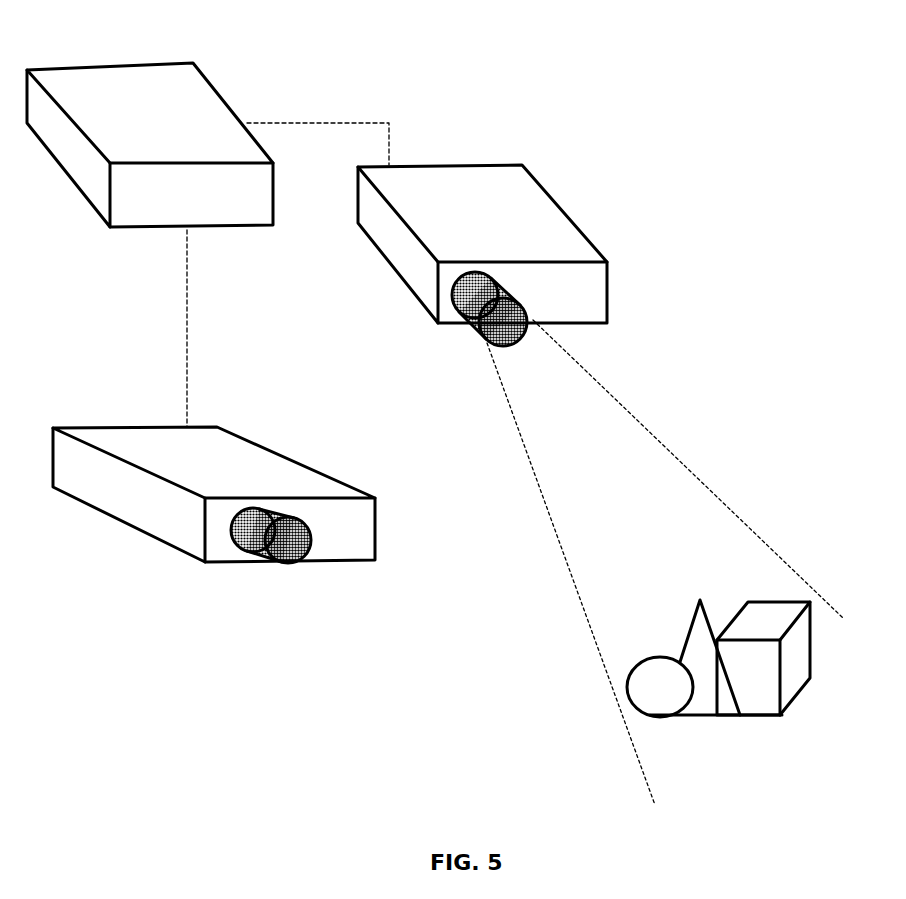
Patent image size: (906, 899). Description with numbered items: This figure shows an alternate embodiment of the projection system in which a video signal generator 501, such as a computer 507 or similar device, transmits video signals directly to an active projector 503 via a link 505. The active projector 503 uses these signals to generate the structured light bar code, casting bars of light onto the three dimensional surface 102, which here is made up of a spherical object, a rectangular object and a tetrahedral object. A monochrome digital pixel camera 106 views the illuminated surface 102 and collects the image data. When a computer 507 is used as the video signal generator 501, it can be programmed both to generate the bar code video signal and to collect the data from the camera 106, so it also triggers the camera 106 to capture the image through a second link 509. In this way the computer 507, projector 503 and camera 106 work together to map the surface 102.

The video signal generator 501 is at (262, 81).
The computer 507 is at (143, 63).
The link 505 is at (355, 123).
The link 509 is at (190, 312).
The active projector 503 is at (578, 228).
The monochrome digital pixel camera 106 is at (118, 427).
The three dimensional surface 102 is at (782, 600).